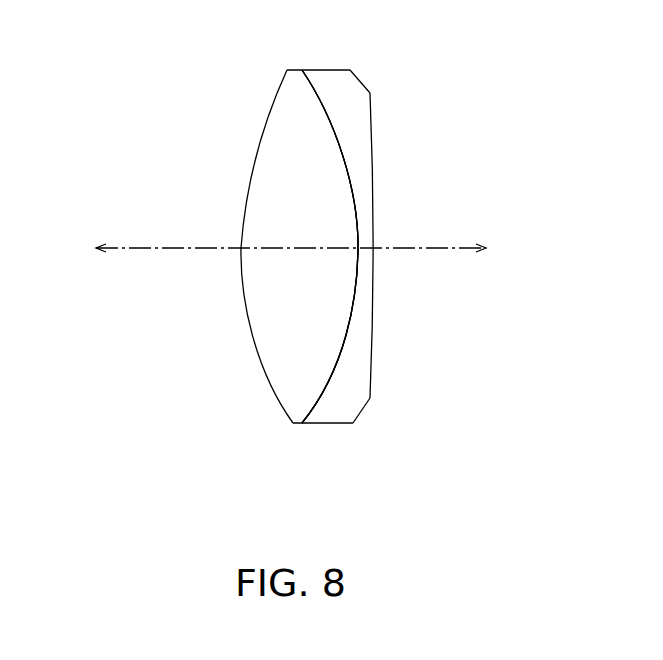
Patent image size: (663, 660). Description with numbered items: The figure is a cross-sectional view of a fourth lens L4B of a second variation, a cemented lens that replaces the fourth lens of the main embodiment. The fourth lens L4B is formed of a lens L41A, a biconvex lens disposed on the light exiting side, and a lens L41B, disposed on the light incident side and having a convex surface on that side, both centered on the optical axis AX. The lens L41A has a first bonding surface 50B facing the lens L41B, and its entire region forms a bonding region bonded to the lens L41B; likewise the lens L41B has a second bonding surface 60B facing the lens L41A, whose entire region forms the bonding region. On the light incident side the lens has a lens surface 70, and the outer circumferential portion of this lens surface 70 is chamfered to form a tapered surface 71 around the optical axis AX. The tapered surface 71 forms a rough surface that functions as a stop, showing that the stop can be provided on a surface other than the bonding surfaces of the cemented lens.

The fourth lens L4B is at (271, 259).
The lens L41A is at (297, 426).
The lens L41B is at (325, 426).
The first bonding surface 50B is at (335, 372).
The second bonding surface 60B is at (279, 264).
The lens surface 70 is at (372, 358).
The tapered surface 71 is at (362, 80).
The optical axis AX is at (143, 246).